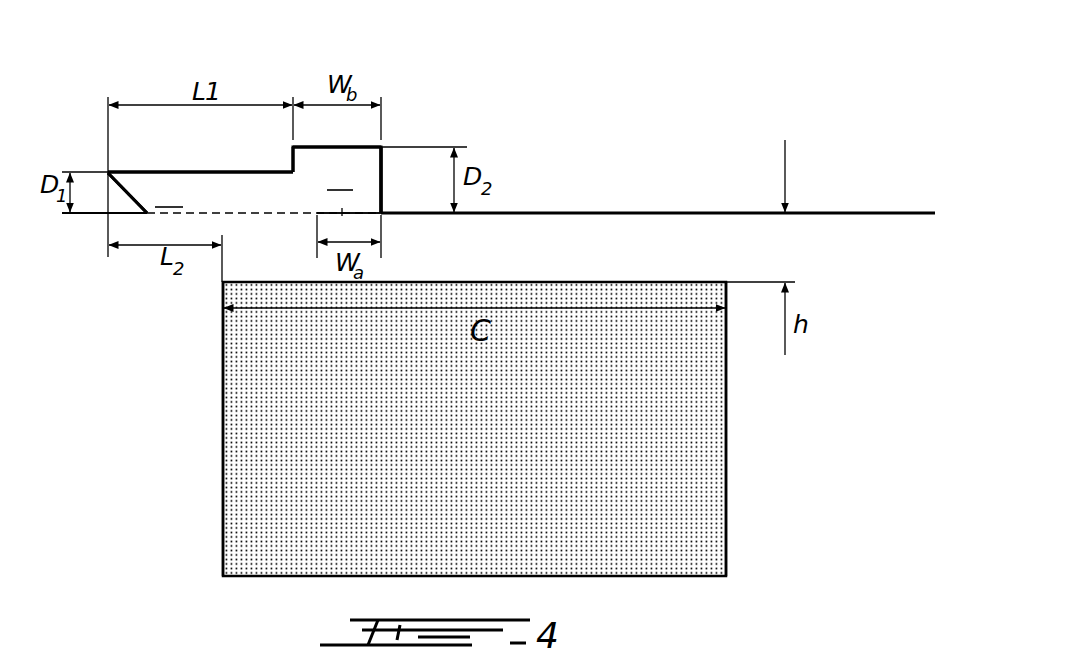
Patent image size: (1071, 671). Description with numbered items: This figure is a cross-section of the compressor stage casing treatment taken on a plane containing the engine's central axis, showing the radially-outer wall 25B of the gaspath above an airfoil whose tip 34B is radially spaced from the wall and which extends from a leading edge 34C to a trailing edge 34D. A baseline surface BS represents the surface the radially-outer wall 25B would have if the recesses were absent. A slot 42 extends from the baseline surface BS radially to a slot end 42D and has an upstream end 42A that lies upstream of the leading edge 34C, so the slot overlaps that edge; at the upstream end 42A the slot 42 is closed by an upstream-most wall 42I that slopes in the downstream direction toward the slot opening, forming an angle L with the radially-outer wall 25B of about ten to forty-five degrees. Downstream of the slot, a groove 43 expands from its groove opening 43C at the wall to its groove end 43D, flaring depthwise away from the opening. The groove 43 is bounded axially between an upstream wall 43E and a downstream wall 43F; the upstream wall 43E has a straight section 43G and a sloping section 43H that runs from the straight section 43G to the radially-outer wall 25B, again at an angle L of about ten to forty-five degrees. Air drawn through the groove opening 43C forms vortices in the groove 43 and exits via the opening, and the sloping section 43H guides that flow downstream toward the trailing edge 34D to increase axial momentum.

The slot 42 is at (222, 150).
The upstream end 42A is at (112, 178).
The slot end 42D is at (172, 172).
The upstream-most wall 42I is at (117, 208).
The groove 43 is at (366, 131).
The groove opening 43C is at (361, 211).
The groove end 43D is at (320, 147).
The upstream wall 43E is at (308, 200).
The downstream wall 43F is at (383, 163).
The straight section 43G is at (293, 160).
The sloping section 43H is at (428, 247).
The radially-outer wall 25B is at (658, 212).
The tip 34B is at (552, 281).
The leading edge 34C is at (223, 490).
The trailing edge 34D is at (726, 486).
The baseline surface BS is at (343, 214).
The angle L is at (110, 202).